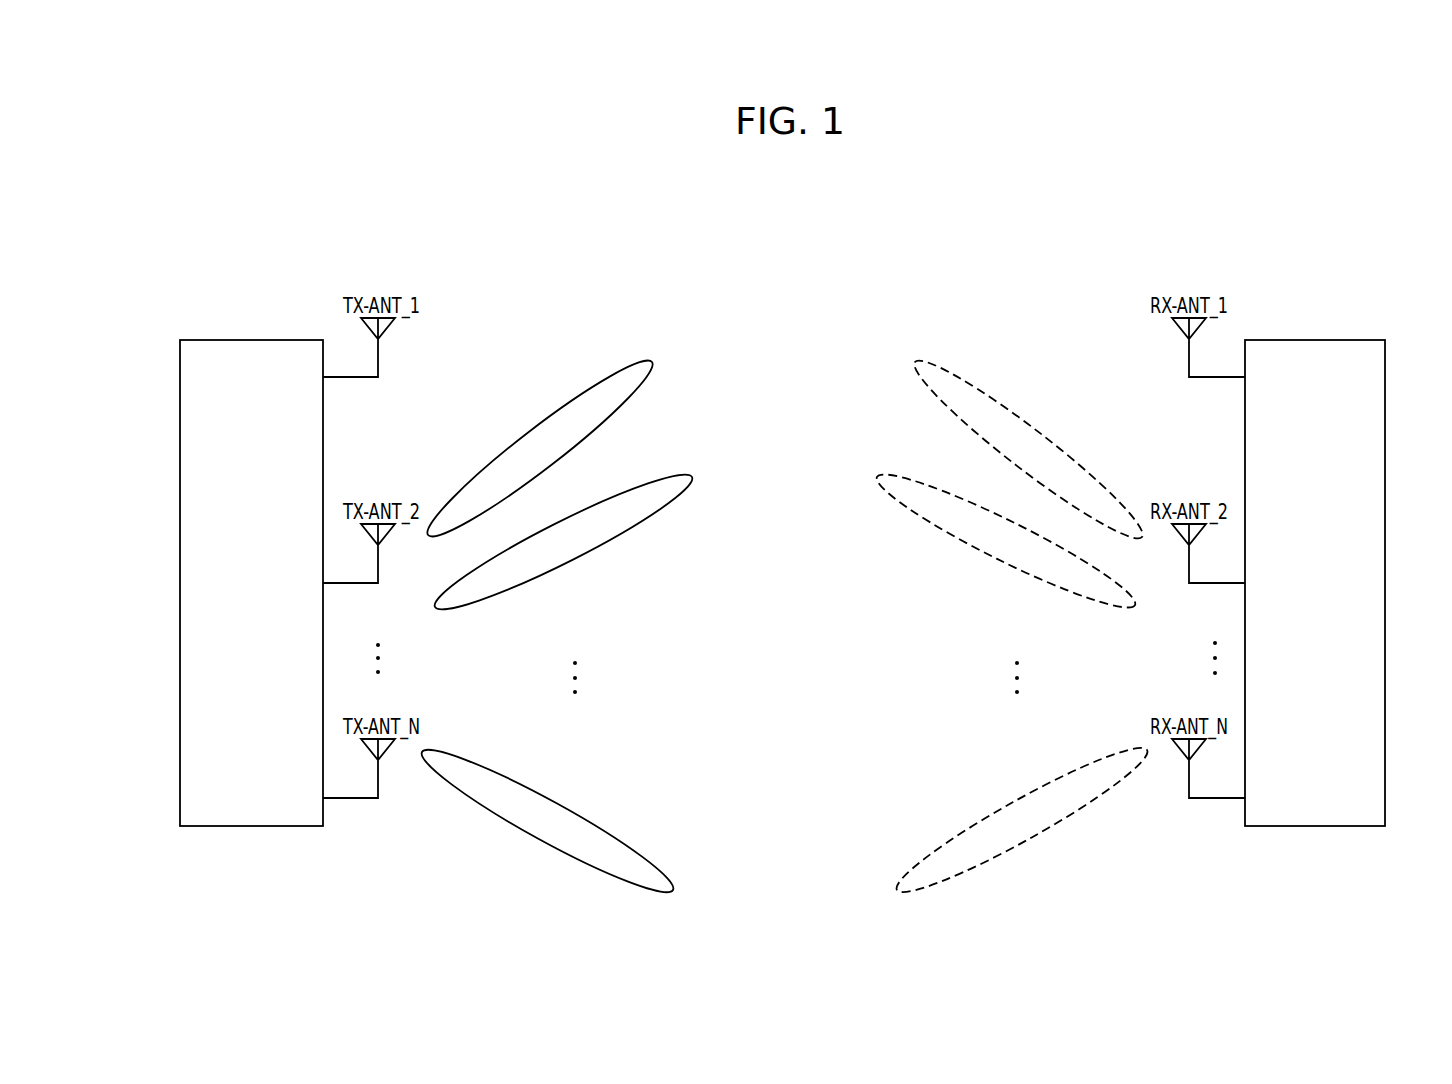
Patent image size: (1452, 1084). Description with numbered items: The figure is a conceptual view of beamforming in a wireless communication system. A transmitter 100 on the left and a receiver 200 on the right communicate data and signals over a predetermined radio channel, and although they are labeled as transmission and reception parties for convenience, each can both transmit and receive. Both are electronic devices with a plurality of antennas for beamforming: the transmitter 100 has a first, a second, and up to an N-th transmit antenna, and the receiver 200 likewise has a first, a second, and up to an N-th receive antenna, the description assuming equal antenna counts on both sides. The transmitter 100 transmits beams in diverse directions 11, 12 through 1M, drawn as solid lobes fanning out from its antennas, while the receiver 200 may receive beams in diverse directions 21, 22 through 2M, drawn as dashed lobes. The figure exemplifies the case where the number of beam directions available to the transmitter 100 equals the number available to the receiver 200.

The transmitter 100 is at (180, 418).
The receiver 200 is at (1385, 388).
The first transmit beam direction 11 is at (607, 375).
The second transmit beam direction 12 is at (667, 476).
The M-th transmit beam direction 1M is at (629, 848).
The first receive beam direction 21 is at (958, 375).
The second receive beam direction 22 is at (904, 477).
The M-th receive beam direction 2M is at (940, 848).